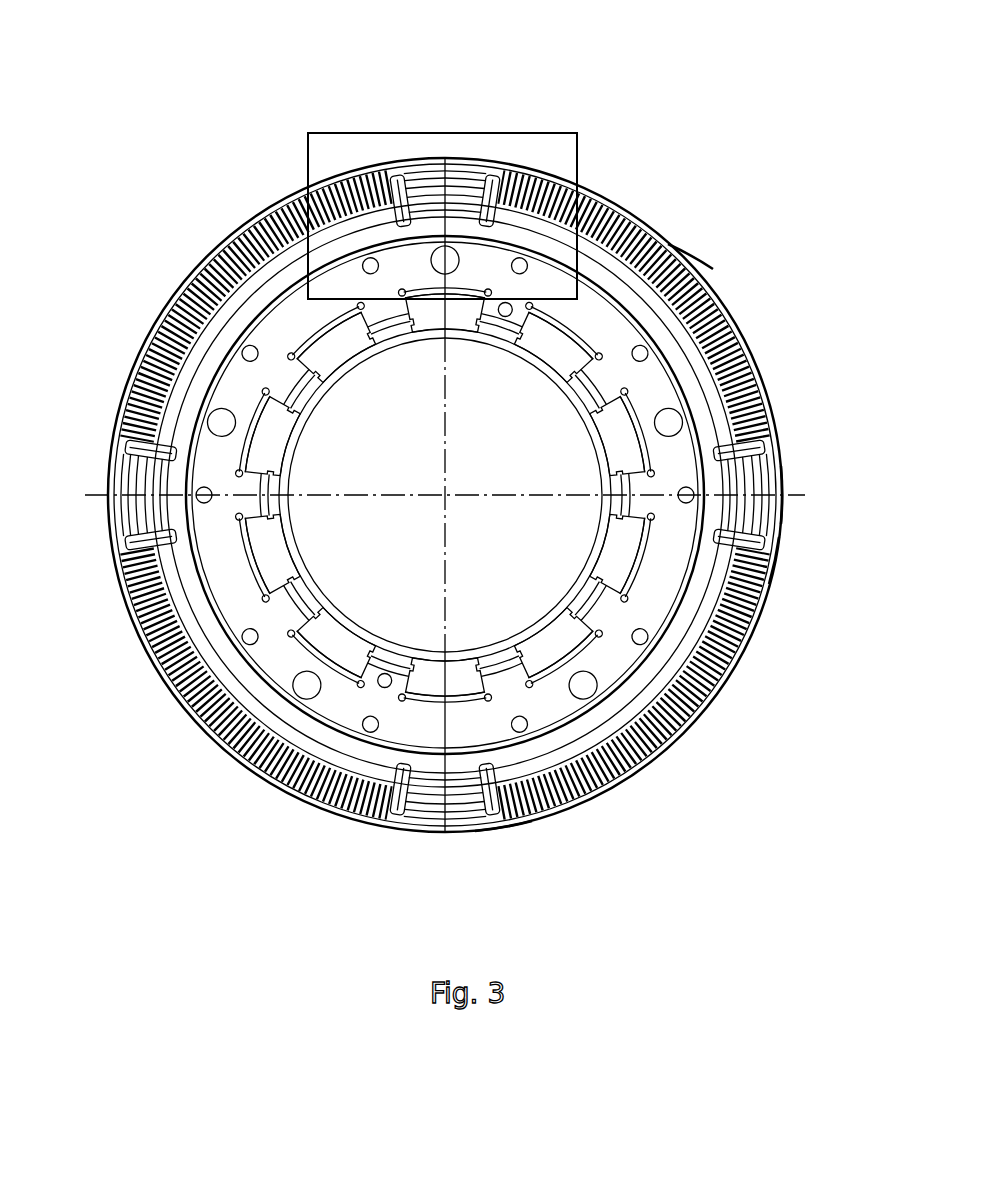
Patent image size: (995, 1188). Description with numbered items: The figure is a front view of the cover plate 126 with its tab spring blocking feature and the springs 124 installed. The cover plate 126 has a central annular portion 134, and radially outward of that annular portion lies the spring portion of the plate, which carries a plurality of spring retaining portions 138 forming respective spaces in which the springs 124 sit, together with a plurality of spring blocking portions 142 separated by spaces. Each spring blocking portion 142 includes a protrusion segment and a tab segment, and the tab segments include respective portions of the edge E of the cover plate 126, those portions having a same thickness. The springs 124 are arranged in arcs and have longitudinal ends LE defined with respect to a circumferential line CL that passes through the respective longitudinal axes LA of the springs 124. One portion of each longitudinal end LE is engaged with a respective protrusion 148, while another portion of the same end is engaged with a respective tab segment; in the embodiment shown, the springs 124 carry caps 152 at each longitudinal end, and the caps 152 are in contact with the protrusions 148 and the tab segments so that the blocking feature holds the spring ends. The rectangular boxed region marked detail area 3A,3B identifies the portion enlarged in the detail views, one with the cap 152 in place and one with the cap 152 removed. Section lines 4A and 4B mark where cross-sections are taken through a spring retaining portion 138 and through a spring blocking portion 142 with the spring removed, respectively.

The spring 124 is at (685, 250).
The cover plate 126 is at (614, 101).
The annular portion 134 is at (292, 313).
The spring retaining portion 138 is at (154, 302).
The spring blocking portion 142 is at (451, 148).
The protrusion 148 is at (423, 178).
The cap 152 is at (495, 172).
The detail area 3A,3B is at (332, 133).
The circumferential line CL is at (217, 242).
The longitudinal axis LA is at (717, 298).
The edge E is at (778, 465).
The longitudinal end LE is at (787, 563).
The section line 4A- 4A is at (205, 733).
The section line 4B- 4B is at (123, 542).